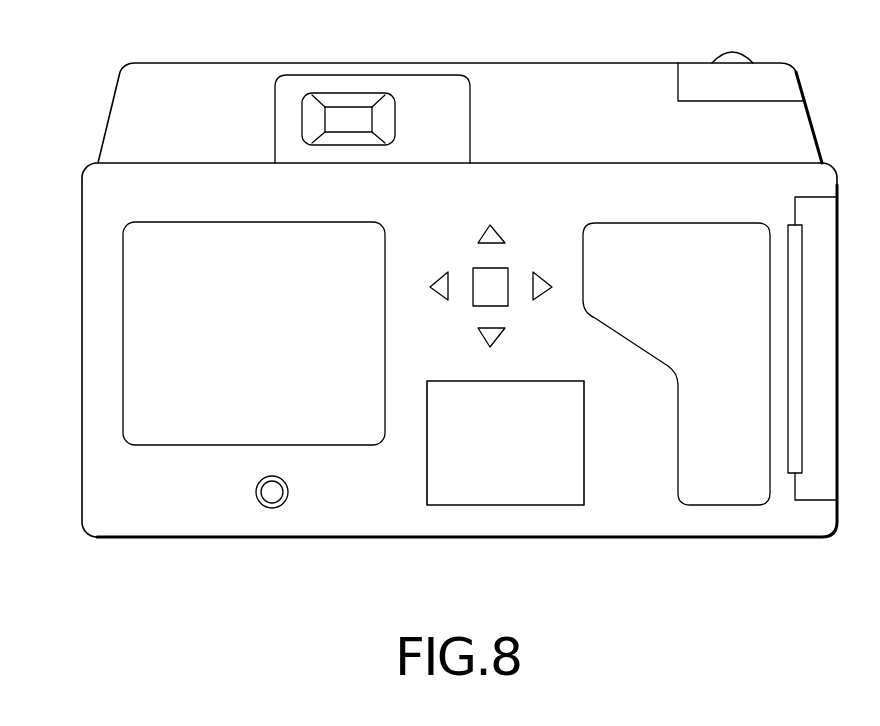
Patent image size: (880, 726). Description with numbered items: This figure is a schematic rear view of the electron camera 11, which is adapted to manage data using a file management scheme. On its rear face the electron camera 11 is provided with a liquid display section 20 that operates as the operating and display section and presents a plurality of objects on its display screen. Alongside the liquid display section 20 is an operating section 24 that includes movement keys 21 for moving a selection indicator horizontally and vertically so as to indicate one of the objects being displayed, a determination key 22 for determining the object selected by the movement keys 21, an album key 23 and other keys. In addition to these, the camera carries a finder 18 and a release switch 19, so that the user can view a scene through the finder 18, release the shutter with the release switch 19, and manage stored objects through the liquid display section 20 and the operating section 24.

The electron camera 11 is at (82, 207).
The finder 18 is at (358, 120).
The release switch 19 is at (733, 52).
The liquid display section 20 is at (133, 347).
The movement keys 21 is at (543, 276).
The determination key 22 is at (508, 306).
The album key 23 is at (276, 490).
The operating section 24 is at (573, 485).